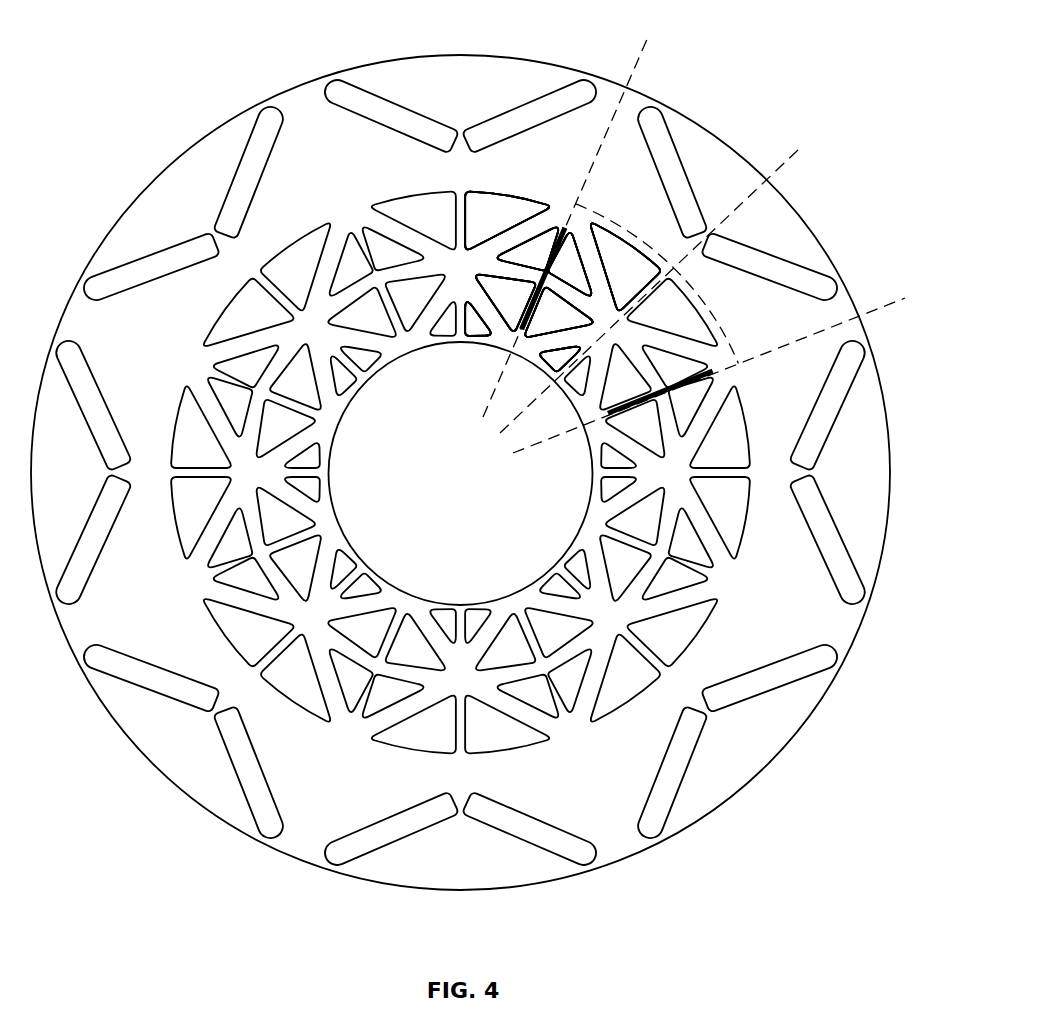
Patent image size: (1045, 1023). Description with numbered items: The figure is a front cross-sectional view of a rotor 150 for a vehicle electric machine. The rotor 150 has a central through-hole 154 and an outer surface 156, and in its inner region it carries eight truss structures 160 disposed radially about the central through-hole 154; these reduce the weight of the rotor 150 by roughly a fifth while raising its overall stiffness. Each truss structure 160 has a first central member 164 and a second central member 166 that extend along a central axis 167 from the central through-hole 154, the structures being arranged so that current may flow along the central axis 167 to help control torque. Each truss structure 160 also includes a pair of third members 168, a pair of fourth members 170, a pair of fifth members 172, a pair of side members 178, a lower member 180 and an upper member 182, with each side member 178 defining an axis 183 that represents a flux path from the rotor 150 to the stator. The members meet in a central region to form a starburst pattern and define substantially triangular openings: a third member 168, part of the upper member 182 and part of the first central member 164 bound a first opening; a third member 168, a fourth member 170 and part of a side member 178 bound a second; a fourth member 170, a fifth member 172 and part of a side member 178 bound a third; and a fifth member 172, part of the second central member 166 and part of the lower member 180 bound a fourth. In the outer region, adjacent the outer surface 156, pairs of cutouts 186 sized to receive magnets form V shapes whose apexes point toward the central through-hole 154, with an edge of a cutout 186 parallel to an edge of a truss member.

The rotor 150 is at (488, 446).
The central through-hole 154 is at (447, 342).
The outer surface 156 is at (507, 57).
The truss structure 160 is at (713, 317).
The first central member 164 is at (631, 297).
The second central member 166 is at (525, 353).
The central axis 167 is at (787, 153).
The third member 168 is at (600, 247).
The fourth member 170 is at (548, 250).
The fifth member 172 is at (538, 255).
The side member 178 is at (540, 262).
The lower member 180 is at (686, 283).
The upper member 182 is at (640, 240).
The axis 183 is at (640, 52).
The cutout 186 is at (676, 137).